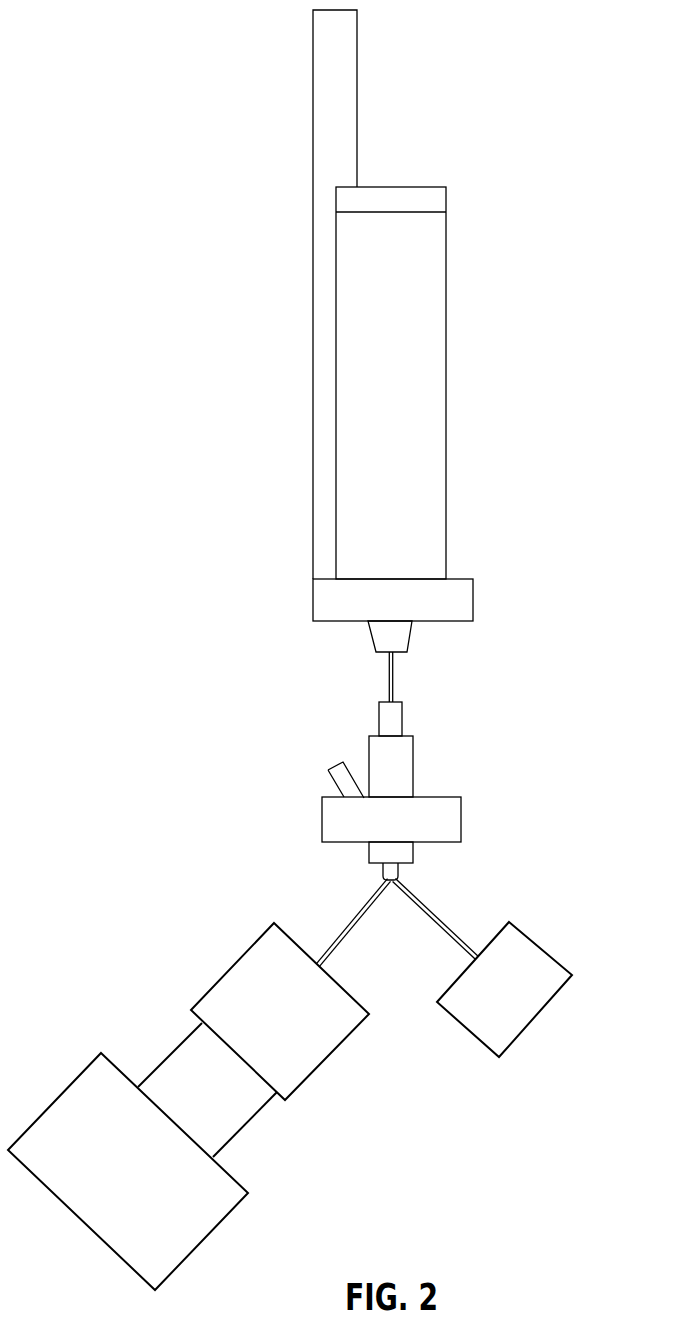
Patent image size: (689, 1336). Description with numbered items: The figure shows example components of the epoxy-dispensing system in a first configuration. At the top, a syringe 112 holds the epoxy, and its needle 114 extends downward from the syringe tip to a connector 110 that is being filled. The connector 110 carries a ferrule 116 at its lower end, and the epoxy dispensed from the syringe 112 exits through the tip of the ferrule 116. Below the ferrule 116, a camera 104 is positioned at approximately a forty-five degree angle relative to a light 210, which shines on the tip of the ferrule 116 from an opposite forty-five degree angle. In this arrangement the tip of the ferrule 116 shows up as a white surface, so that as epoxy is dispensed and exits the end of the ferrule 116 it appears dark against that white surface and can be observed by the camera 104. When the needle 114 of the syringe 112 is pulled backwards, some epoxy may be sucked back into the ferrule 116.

The syringe 112 is at (423, 333).
The needle 114 is at (393, 681).
The connector 110 is at (407, 760).
The ferrule 116 is at (392, 870).
The camera 104 is at (241, 975).
The light 210 is at (532, 960).